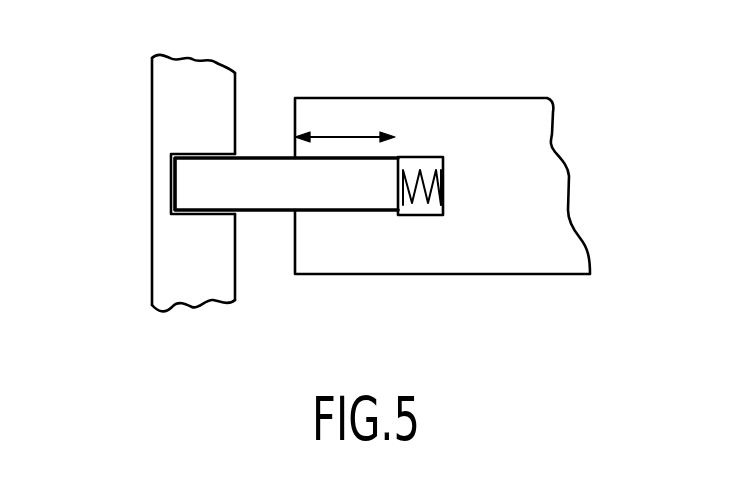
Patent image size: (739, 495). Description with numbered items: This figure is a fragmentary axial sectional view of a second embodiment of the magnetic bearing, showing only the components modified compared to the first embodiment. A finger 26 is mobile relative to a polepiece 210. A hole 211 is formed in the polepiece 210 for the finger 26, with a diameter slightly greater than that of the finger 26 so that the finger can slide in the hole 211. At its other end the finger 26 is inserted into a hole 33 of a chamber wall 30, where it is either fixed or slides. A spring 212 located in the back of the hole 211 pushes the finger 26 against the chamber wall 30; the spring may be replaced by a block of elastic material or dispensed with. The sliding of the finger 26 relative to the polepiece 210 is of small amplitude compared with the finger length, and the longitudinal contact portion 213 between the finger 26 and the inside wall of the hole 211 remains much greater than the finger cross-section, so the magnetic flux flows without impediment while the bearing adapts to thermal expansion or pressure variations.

The chamber wall 30 is at (152, 103).
The hole 33 is at (171, 192).
The finger 26 is at (258, 158).
The polepiece 210 is at (447, 98).
The hole 211 is at (420, 208).
The spring 212 is at (440, 197).
The longitudinal contact portion 213 is at (342, 137).